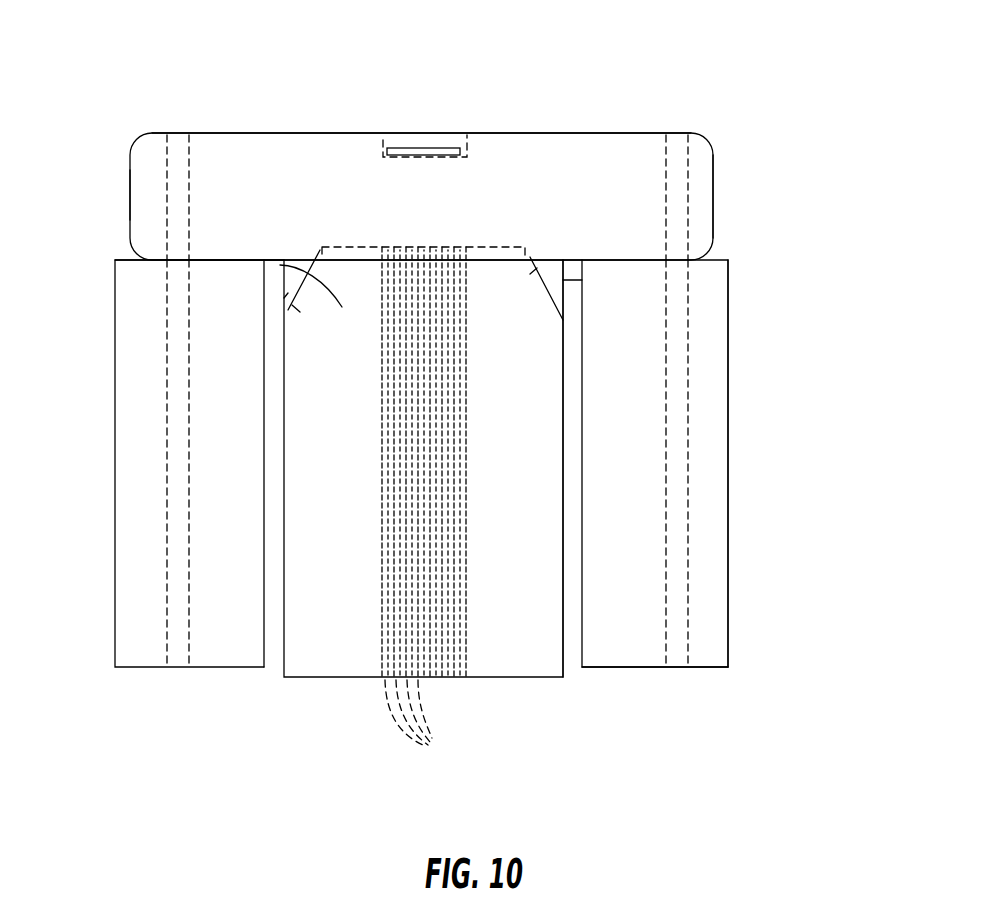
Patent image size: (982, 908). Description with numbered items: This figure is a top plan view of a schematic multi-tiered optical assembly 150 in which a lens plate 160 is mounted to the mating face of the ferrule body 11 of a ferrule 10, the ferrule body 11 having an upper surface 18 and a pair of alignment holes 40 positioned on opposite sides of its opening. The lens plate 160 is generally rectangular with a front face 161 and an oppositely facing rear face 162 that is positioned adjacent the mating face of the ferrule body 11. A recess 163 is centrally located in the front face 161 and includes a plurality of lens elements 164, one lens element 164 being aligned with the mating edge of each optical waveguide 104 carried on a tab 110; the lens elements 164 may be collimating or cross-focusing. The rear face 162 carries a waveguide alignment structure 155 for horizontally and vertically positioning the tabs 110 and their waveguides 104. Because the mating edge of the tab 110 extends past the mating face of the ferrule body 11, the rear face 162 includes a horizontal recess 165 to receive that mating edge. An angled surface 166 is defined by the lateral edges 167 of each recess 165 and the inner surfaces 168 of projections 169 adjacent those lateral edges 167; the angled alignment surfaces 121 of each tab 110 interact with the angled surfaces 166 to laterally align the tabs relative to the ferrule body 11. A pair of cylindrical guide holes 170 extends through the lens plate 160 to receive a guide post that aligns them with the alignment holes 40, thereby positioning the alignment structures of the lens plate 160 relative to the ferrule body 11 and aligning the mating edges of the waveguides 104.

The ferrule 10 is at (797, 308).
The ferrule body 11 is at (728, 350).
The upper surface 18 is at (728, 453).
The alignment holes 40 is at (170, 525).
The optical waveguides 104 is at (436, 752).
The tab 110 is at (342, 638).
The angled horizontal alignment surface 121 is at (280, 265).
The multi-tiered optical assembly 150 is at (787, 125).
The waveguide alignment structure 155 is at (503, 161).
The lens plate 160 is at (648, 133).
The front face 161 is at (595, 133).
The rear face 162 is at (203, 262).
The recess 163 is at (397, 145).
The lens elements 164 is at (428, 148).
The horizontal recess 165 is at (372, 247).
The angled surface 166 is at (543, 290).
The lateral edges 167 is at (327, 247).
The inner surfaces 168 is at (292, 305).
The projections 169 is at (288, 293).
The guide holes 170 is at (177, 185).